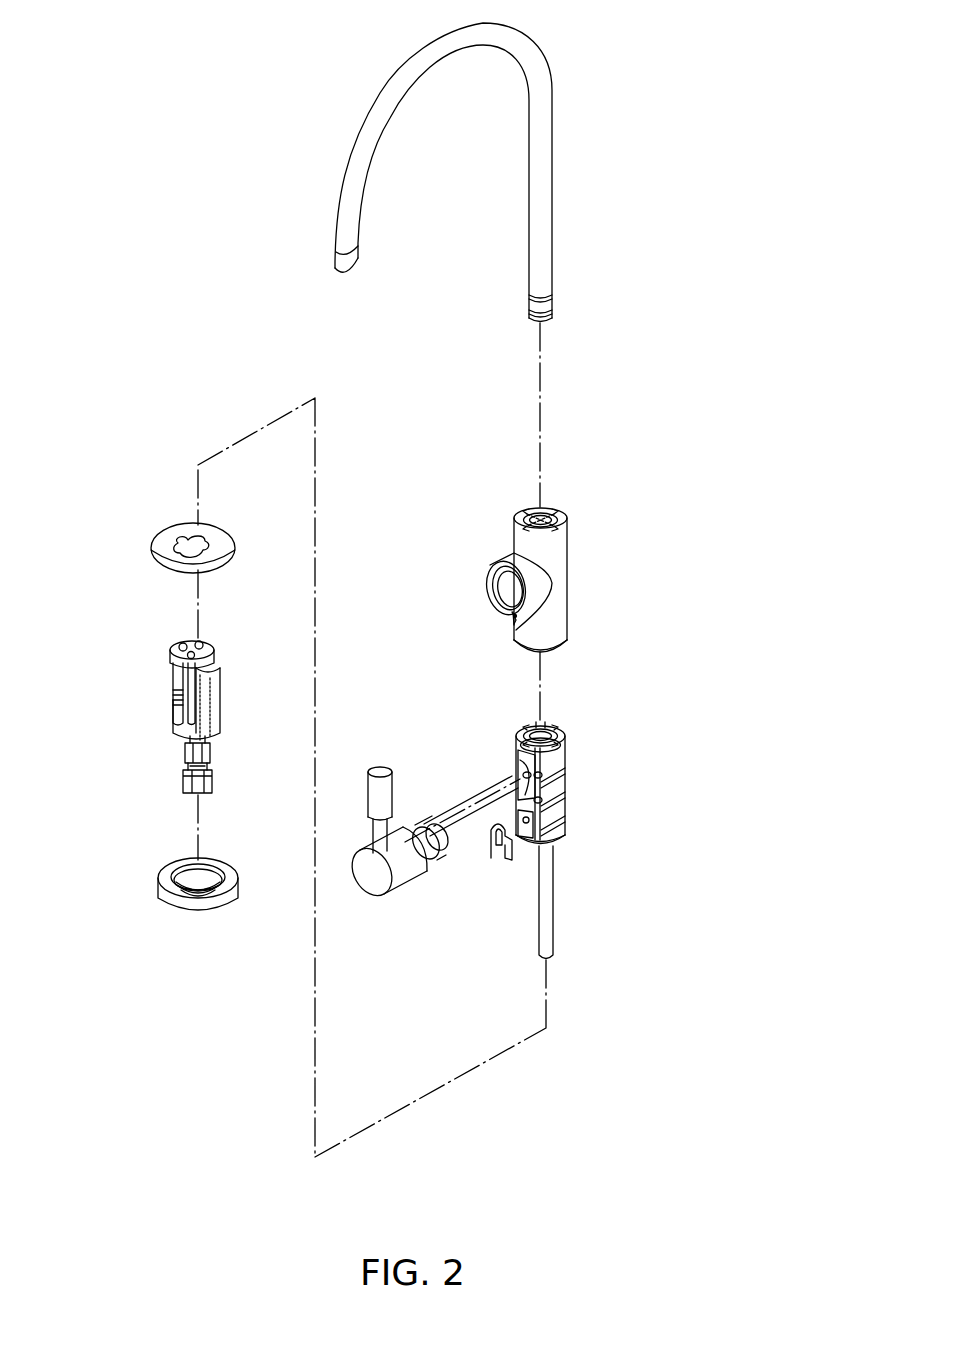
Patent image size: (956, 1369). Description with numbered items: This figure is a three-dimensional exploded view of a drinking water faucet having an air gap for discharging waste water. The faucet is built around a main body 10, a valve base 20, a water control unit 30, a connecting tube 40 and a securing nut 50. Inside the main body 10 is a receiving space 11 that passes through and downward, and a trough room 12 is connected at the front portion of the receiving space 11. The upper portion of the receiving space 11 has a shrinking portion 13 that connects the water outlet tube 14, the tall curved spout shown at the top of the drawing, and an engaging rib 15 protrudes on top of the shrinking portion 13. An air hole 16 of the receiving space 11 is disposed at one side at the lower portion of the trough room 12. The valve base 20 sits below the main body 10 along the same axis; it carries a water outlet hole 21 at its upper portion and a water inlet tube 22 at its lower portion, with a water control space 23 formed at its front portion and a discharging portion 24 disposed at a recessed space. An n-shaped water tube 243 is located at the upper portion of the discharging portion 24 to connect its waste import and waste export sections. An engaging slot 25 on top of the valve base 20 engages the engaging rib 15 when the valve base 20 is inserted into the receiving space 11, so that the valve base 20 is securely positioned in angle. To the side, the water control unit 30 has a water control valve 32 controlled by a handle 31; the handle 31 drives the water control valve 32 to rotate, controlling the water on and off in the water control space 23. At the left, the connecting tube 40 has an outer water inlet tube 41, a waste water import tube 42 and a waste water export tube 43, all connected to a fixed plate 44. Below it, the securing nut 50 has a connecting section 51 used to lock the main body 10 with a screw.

The main body 10 is at (571, 585).
The receiving space 11 is at (553, 653).
The trough room 12 is at (490, 583).
The shrinking portion 13 is at (548, 513).
The water outlet tube 14 is at (538, 192).
The engaging rib 15 is at (522, 507).
The air hole 16 is at (513, 617).
The valve base 20 is at (574, 800).
The water outlet hole 21 is at (557, 727).
The water inlet tube 22 is at (547, 918).
The water control space 23 is at (517, 771).
The discharging portion 24 is at (557, 837).
The engaging slot 25 is at (528, 722).
The n-shaped water tube 243 is at (492, 836).
The water control unit 30 is at (380, 765).
The handle 31 is at (382, 882).
The water control valve 32 is at (425, 818).
The connecting tube 40 is at (186, 684).
The outer water inlet tube 41 is at (180, 745).
The waste water import tube 42 is at (200, 685).
The waste water export tube 43 is at (178, 680).
The fixed plate 44 is at (175, 658).
The securing nut 50 is at (180, 840).
The connecting section 51 is at (173, 873).